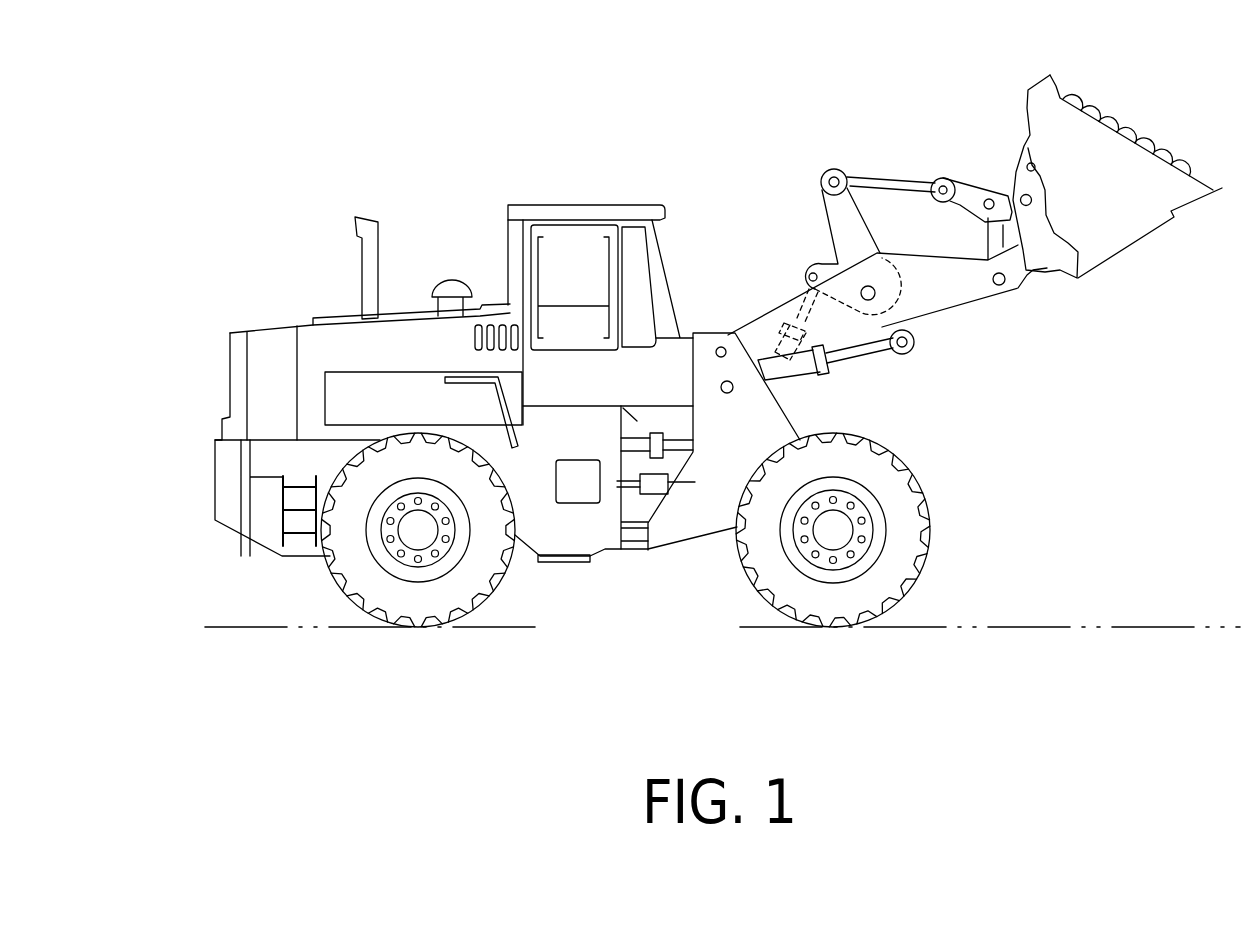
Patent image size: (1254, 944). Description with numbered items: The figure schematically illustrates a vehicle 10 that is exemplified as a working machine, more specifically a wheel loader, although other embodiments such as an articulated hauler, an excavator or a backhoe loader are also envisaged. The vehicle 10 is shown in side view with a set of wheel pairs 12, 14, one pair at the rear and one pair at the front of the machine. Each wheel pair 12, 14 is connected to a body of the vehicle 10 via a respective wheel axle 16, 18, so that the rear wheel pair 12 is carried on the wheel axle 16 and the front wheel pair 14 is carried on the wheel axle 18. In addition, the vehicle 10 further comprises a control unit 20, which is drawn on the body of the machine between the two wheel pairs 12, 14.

The vehicle 10 is at (455, 141).
The wheel pair 12 is at (356, 635).
The wheel pair 14 is at (852, 640).
The wheel axle 16 is at (405, 521).
The wheel axle 18 is at (839, 532).
The control unit 20 is at (565, 505).